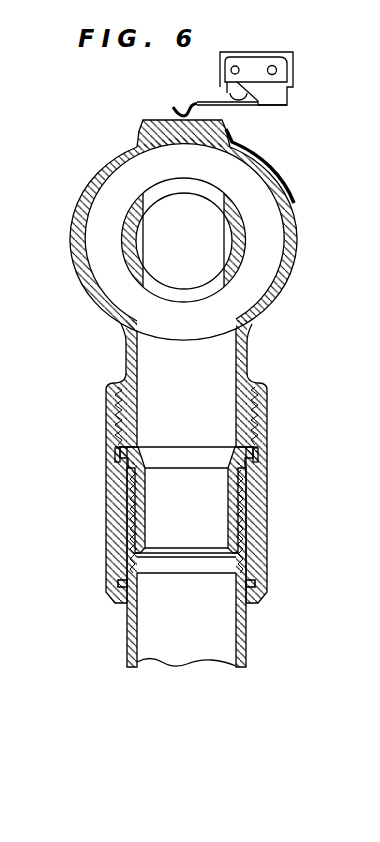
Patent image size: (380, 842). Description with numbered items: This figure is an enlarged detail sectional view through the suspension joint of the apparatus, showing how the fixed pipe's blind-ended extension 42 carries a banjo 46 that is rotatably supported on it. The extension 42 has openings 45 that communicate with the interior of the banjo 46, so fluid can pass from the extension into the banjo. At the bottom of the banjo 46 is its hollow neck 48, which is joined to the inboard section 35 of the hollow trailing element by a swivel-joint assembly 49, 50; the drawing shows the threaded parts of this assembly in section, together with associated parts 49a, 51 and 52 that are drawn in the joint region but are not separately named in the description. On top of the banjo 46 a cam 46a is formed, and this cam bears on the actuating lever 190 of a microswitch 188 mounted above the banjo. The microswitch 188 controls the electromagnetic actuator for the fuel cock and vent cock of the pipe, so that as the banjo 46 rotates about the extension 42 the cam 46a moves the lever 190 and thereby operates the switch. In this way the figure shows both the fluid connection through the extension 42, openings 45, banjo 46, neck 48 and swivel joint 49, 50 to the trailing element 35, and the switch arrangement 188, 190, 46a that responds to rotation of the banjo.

The inboard section of the hollow trailing element 35 is at (243, 642).
The blind-ended extension 42 is at (241, 220).
The openings 45 is at (192, 290).
The banjo 46 is at (296, 267).
The cam 46a is at (226, 128).
The hollow neck 48 is at (246, 345).
The swivel-joint assembly 49 is at (263, 552).
The lock ring 49a is at (258, 464).
The swivel-joint assembly 50 is at (238, 507).
The nut 51 is at (267, 386).
The seal ring 52 is at (255, 587).
The microswitch 188 is at (294, 75).
The actuating lever 190 is at (197, 102).